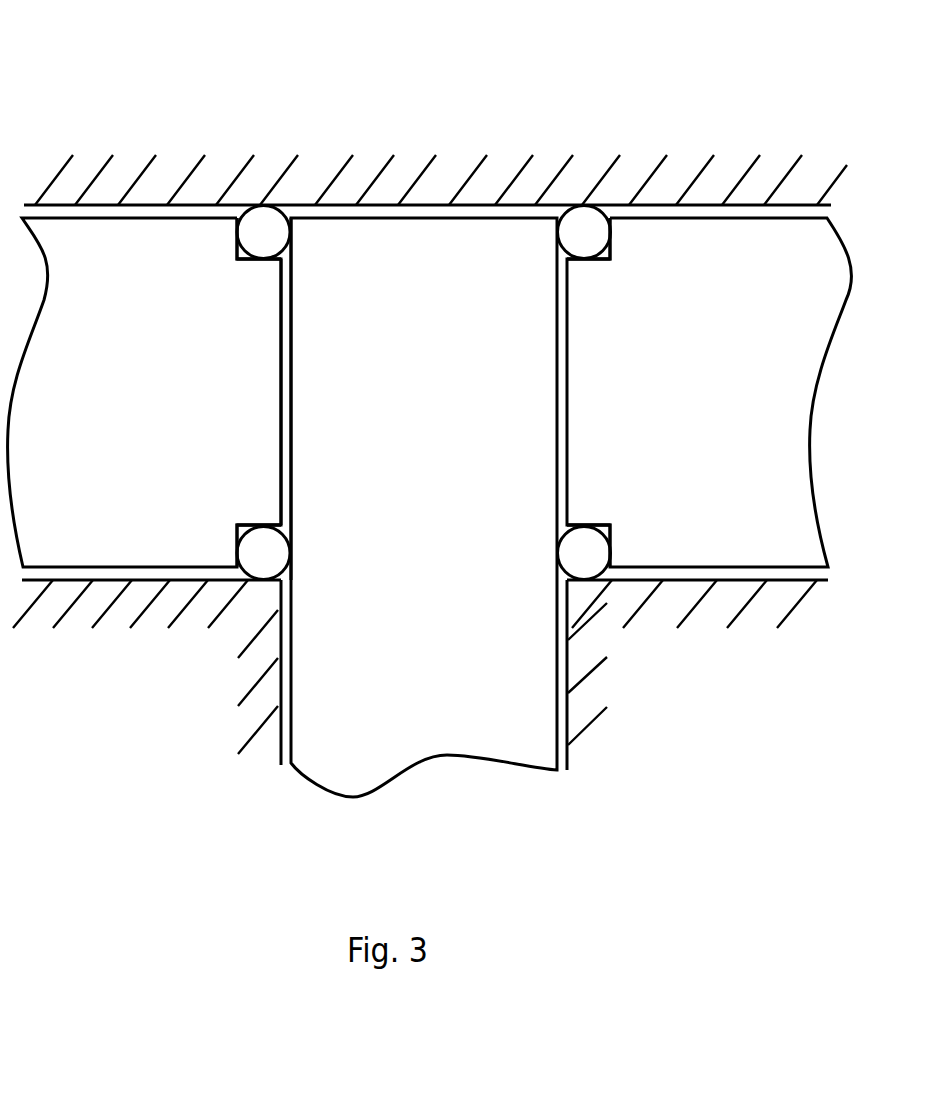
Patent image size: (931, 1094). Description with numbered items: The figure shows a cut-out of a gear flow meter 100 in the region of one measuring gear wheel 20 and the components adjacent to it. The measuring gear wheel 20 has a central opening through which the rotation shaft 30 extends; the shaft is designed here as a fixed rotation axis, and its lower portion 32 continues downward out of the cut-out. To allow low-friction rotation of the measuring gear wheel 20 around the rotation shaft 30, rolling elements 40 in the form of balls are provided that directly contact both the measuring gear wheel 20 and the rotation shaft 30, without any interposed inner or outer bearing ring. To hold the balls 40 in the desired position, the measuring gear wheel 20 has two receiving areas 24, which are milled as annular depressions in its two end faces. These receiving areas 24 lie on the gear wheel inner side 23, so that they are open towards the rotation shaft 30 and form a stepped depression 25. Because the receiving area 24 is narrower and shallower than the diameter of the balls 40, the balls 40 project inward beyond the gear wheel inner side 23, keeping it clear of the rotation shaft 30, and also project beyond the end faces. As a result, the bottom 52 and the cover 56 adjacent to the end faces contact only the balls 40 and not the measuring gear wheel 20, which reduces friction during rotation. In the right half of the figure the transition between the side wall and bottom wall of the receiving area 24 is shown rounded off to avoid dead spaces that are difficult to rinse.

The sealing assembly 100 is at (663, 92).
The cover 56 is at (426, 77).
The measuring gear wheel 20 is at (134, 402).
The gear wheel inner side 23 is at (281, 407).
The receiving area 24 is at (237, 260).
The stepped depression 25 is at (237, 255).
The rotation shaft 30 is at (415, 470).
The lower portion of pin 32 is at (370, 647).
The rolling elements 40 is at (262, 232).
The bottom 52 is at (134, 706).